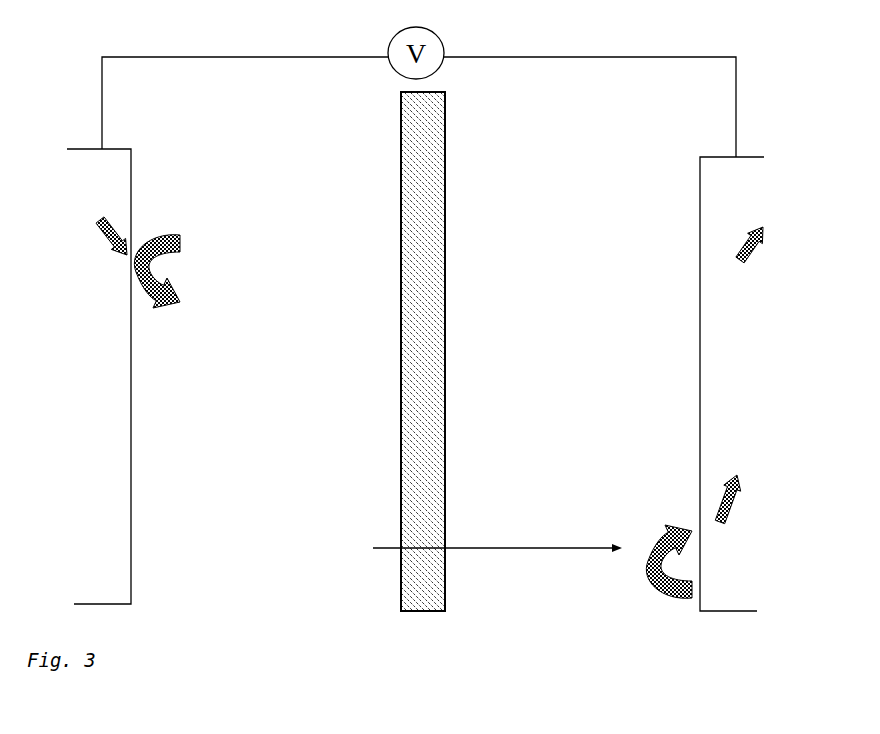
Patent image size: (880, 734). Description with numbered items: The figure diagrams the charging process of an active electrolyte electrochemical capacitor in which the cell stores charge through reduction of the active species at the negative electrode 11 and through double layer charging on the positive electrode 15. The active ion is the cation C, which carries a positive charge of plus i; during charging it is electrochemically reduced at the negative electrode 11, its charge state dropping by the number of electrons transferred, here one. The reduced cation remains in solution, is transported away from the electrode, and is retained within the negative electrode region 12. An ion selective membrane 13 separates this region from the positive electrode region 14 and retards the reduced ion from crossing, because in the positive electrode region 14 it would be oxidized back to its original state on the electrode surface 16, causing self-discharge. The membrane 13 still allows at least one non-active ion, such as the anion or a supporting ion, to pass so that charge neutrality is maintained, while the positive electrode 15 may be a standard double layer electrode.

The negative electrode 11 is at (119, 176).
The negative electrode region 12 is at (268, 177).
The ion selective membrane 13 is at (418, 176).
The positive electrode region 14 is at (560, 177).
The positive electrode 15 is at (738, 178).
The electrode surface 16 is at (688, 503).